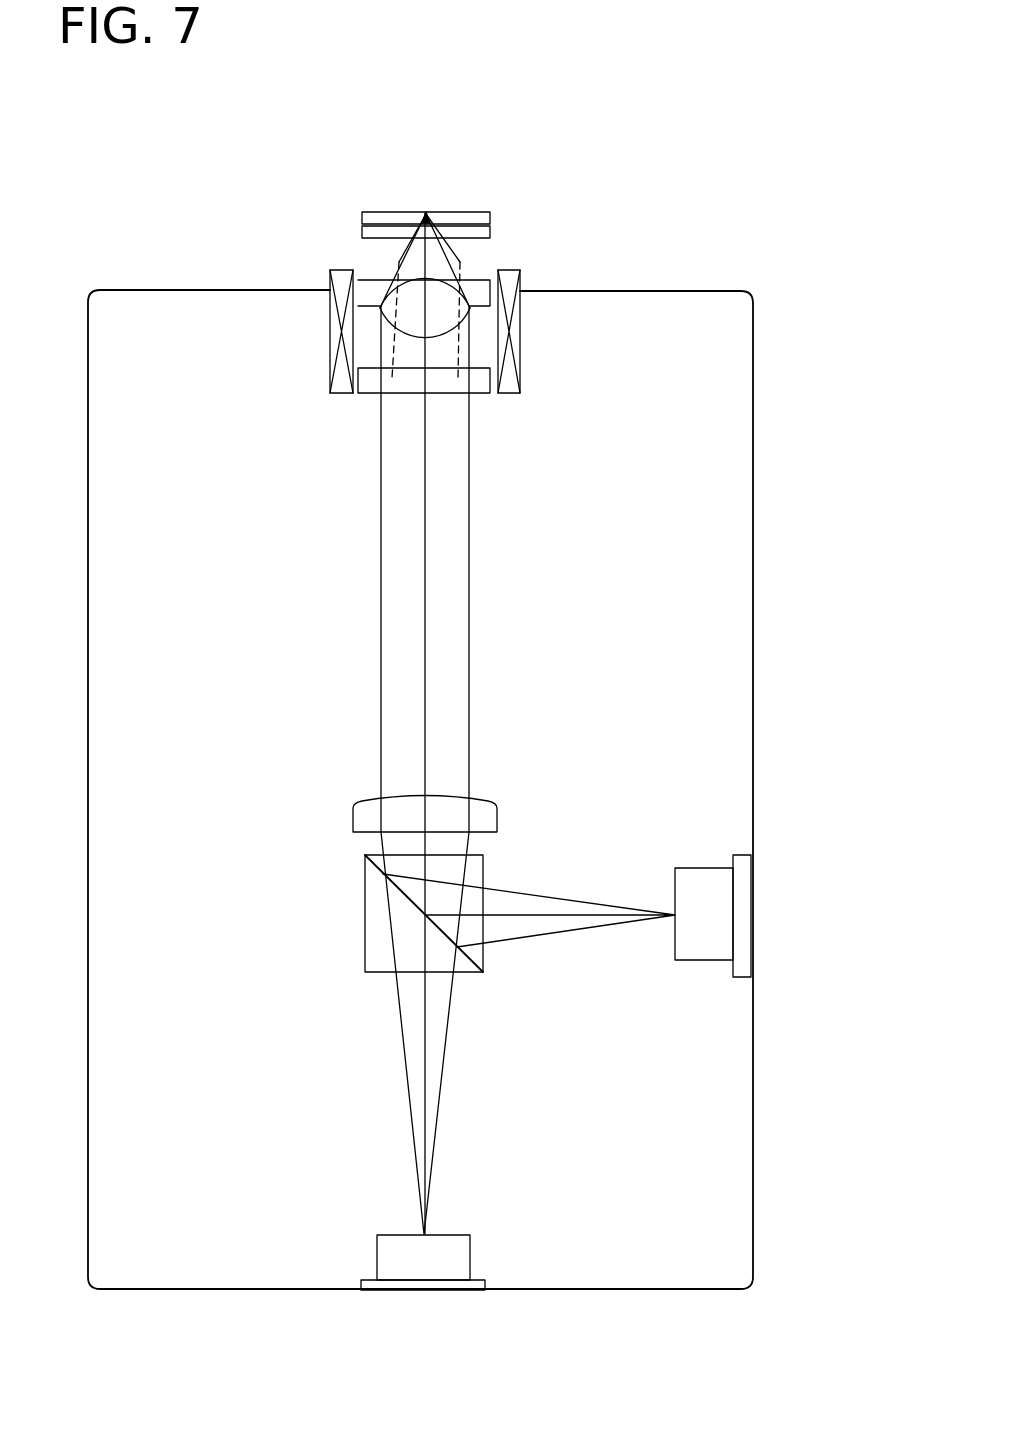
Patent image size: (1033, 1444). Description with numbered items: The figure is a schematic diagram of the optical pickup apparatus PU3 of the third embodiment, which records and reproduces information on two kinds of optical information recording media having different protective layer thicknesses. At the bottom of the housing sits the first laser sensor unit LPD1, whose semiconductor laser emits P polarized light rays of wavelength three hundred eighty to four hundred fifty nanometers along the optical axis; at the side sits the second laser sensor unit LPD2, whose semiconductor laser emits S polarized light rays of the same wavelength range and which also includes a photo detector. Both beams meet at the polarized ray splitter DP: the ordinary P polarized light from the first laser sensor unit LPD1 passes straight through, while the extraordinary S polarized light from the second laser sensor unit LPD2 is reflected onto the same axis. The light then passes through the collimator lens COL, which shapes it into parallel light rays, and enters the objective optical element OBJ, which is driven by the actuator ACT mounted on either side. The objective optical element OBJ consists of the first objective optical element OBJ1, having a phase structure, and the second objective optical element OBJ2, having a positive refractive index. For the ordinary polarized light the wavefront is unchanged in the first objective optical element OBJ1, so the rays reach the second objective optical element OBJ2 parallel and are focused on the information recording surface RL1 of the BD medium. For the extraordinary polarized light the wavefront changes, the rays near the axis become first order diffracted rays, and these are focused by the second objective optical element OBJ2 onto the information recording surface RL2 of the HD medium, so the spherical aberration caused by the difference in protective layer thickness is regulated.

The optical pickup apparatus PU3 is at (753, 358).
The information recording surface RL2 is at (389, 210).
The information recording surface RL1 is at (462, 224).
The actuator ACT is at (330, 289).
The objective optical element OBJ is at (329, 345).
The second objective optical element OBJ2 is at (403, 324).
The first objective optical element OBJ1 is at (362, 380).
The collimator lens COL is at (363, 813).
The polarized ray splitter DP is at (365, 912).
The second laser sensor unit LPD2 is at (695, 948).
The first laser sensor unit LPD1 is at (423, 1288).